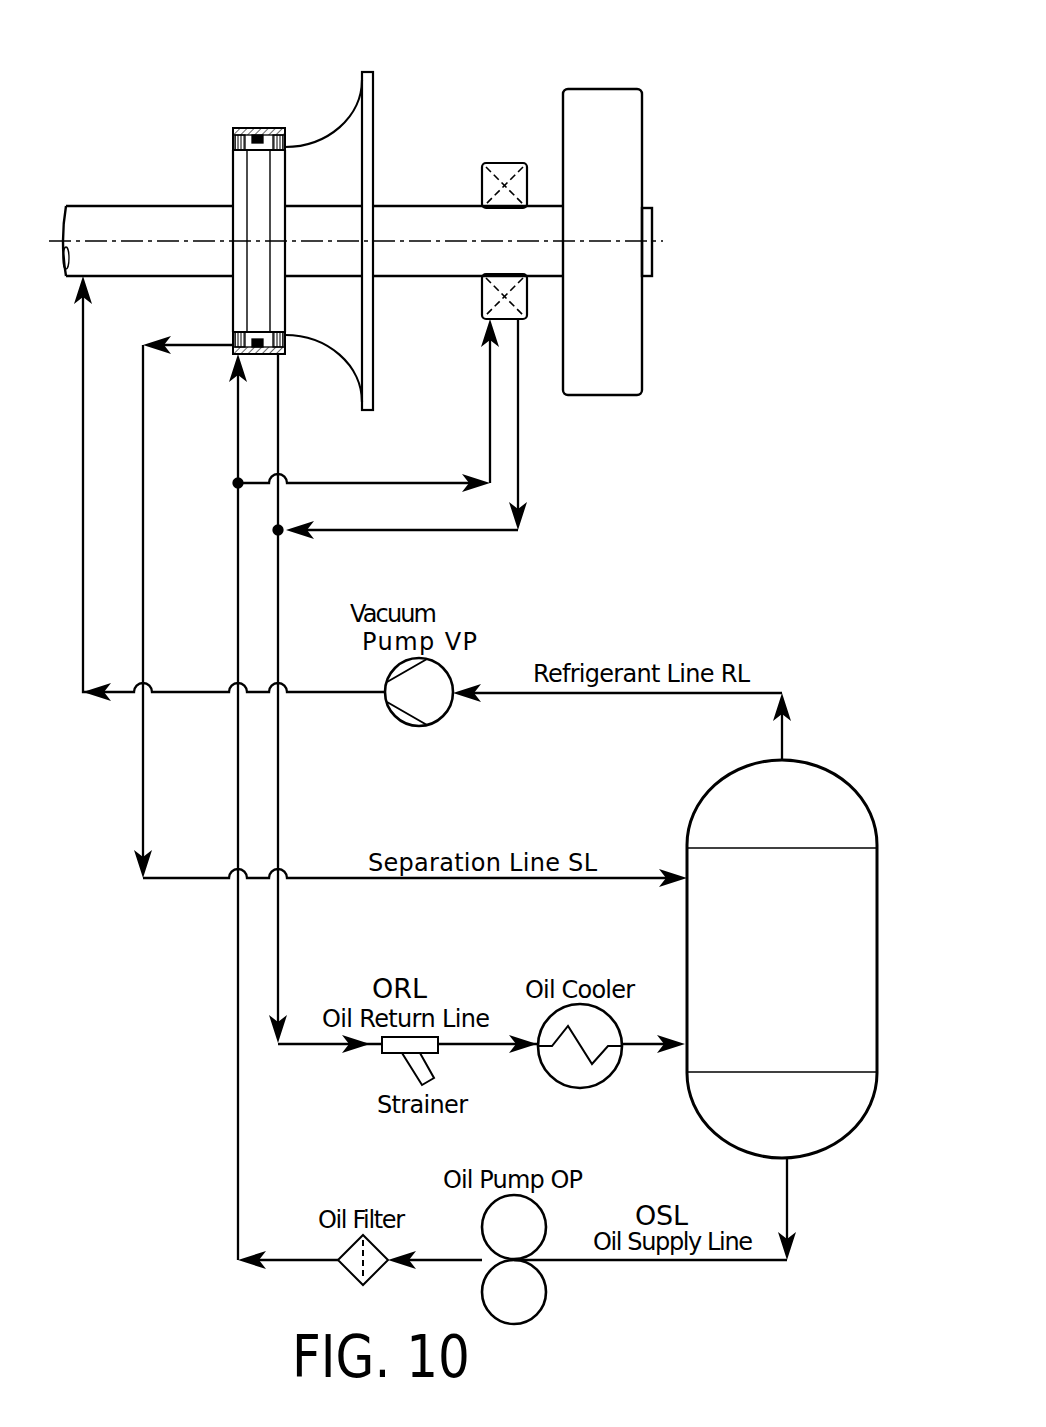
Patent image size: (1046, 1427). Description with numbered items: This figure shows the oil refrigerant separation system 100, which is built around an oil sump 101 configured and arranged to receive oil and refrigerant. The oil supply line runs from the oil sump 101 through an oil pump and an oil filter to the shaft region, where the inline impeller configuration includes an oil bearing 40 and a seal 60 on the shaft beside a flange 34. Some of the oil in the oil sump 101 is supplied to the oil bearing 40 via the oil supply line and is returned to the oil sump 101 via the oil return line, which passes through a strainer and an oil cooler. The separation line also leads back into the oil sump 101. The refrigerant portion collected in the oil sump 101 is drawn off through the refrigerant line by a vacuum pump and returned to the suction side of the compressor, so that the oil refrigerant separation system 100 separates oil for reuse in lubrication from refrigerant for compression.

The impeller flange 34 is at (366, 60).
The oil bearing 40 is at (507, 152).
The shaft seal 60 is at (253, 116).
The oil refrigerant separation system 100 is at (708, 112).
The oil sump 101 is at (782, 959).